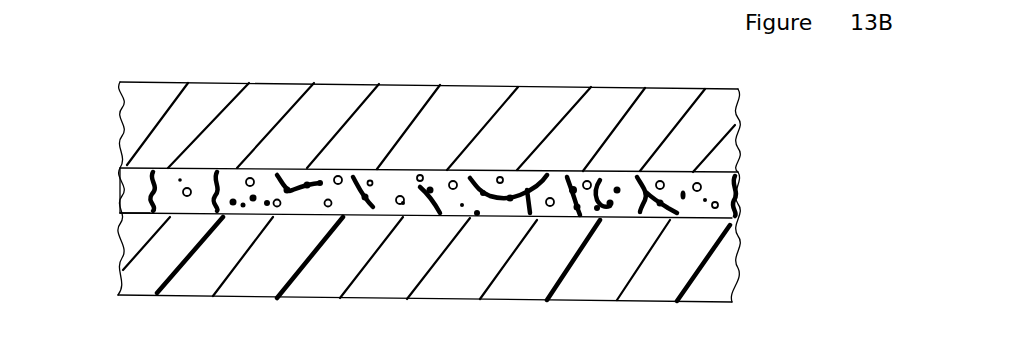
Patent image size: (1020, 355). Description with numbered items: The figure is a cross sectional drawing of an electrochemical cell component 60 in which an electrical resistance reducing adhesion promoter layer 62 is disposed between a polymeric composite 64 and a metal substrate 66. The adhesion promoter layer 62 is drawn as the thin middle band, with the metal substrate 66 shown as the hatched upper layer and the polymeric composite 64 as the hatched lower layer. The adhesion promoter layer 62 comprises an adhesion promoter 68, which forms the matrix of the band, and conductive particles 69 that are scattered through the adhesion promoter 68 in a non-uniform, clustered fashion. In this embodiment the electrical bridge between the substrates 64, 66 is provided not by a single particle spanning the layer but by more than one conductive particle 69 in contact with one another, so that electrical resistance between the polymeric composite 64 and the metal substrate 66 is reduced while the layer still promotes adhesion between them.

The electrochemical cell component 60 is at (204, 56).
The electrical resistance reducing adhesion promoter layer 62 is at (108, 167).
The polymeric composite 64 is at (707, 283).
The metal substrate 66 is at (722, 119).
The adhesion promoter 68 is at (716, 203).
The conductive particles 69 is at (120, 213).